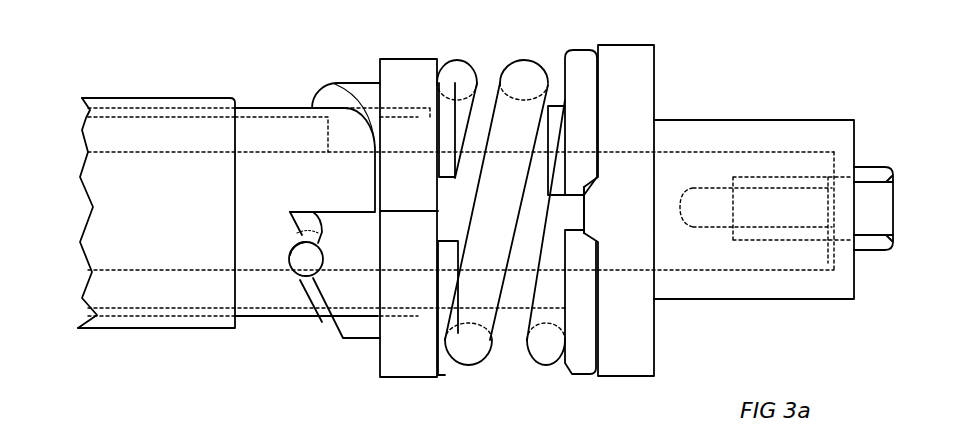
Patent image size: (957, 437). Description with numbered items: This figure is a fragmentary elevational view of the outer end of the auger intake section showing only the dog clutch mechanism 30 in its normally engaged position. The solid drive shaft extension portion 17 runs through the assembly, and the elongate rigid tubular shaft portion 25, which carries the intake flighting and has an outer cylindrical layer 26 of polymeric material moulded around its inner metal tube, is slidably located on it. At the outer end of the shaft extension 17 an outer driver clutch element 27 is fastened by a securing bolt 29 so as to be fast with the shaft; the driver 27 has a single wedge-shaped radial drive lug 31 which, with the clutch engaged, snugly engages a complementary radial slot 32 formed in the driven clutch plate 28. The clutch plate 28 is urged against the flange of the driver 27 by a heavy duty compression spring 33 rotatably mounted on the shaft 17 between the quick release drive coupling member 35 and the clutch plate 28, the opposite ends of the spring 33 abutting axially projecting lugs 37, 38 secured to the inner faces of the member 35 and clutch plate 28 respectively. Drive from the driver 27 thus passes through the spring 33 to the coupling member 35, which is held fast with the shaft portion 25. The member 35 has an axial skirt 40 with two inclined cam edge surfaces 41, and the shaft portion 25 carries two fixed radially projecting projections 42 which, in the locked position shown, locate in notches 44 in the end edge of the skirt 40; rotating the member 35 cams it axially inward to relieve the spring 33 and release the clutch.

The drive shaft extension portion 17 is at (688, 196).
The tubular sleeve or shaft portion 25 is at (122, 97).
The outer cylindrical layer 26 is at (265, 125).
The driver clutch element 27 is at (750, 130).
The driven clutch plate 28 is at (578, 108).
The securing bolt 29 is at (868, 172).
The dog clutch mechanism 30 is at (503, 353).
The radial drive lug 31 is at (582, 203).
The radial slot 32 is at (587, 193).
The compression spring 33 is at (498, 130).
The quick release drive coupling member 35 is at (403, 98).
The axially projecting lug 37 is at (450, 197).
The axially projecting lug 38 is at (553, 180).
The axial skirt 40 is at (348, 300).
The cam edge surfaces 41 is at (345, 97).
The radially projecting projections 42 is at (308, 260).
The notches 44 is at (313, 220).